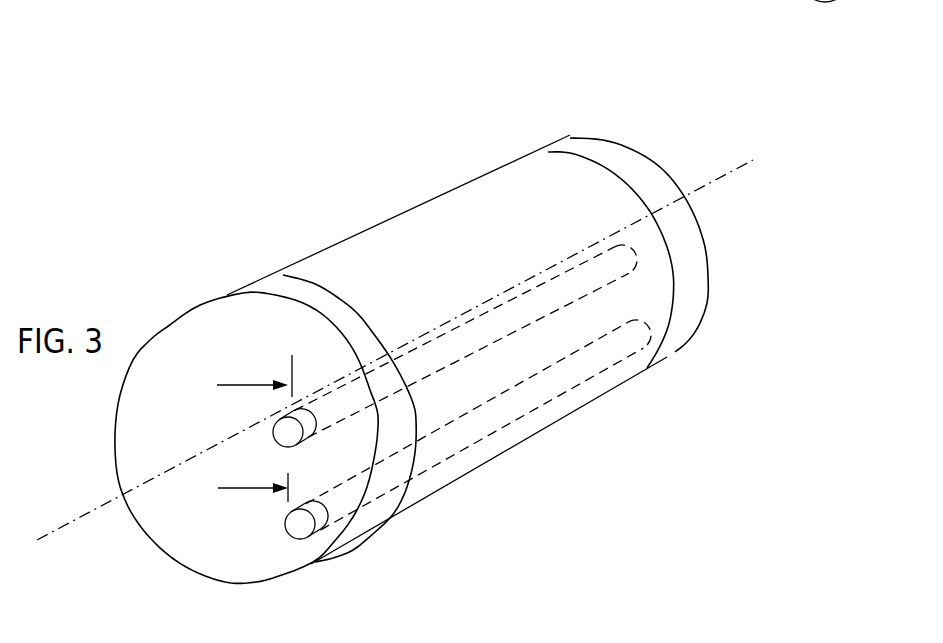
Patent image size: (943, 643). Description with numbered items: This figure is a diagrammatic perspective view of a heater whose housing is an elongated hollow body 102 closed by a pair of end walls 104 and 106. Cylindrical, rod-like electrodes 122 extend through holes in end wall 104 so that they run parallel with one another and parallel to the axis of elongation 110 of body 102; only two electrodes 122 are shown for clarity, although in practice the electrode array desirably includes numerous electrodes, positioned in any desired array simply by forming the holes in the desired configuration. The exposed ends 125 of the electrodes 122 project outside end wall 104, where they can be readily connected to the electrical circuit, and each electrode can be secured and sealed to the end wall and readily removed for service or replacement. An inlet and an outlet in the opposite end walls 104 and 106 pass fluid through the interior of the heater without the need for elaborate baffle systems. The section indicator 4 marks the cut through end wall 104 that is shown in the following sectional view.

The elongated hollow body 102 is at (403, 213).
The end wall 104 is at (250, 291).
The end wall 106 is at (543, 148).
The axis of elongation 110 is at (85, 513).
The cylindrical electrodes 122 is at (522, 310).
The exposed ends 125 is at (317, 530).
The section line for FIG. 4 is at (238, 430).